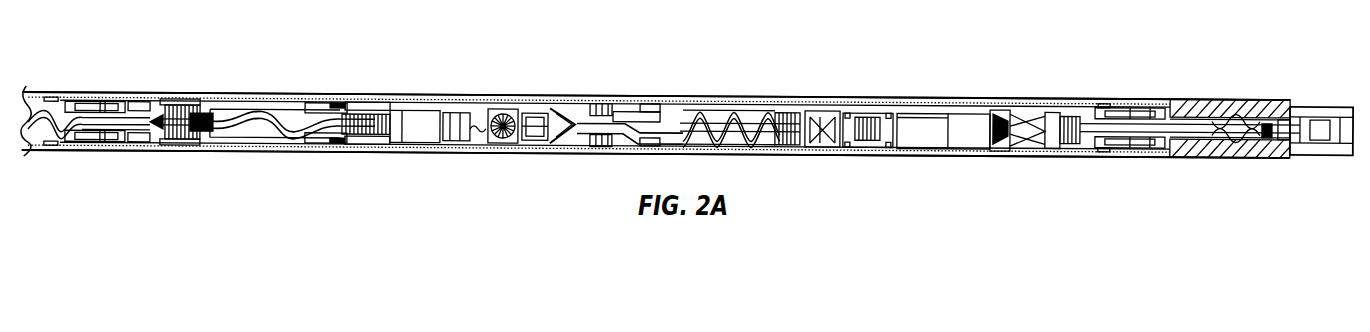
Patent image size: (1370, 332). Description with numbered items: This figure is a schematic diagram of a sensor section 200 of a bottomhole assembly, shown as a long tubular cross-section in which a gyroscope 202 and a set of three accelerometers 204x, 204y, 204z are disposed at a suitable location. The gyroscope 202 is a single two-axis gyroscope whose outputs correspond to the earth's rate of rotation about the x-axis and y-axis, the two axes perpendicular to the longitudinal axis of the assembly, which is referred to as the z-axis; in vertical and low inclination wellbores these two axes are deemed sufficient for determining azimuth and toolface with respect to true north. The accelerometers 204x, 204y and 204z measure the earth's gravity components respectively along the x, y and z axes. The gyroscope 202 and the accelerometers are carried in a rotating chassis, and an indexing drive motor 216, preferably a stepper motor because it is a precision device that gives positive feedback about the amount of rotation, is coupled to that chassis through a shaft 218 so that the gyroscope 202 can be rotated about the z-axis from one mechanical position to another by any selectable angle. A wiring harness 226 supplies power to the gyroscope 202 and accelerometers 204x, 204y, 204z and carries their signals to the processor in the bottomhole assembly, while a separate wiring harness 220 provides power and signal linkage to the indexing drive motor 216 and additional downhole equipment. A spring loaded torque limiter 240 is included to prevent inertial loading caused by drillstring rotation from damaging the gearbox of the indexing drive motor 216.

The sensor section 200 is at (1022, 68).
The gyroscope 202 is at (417, 113).
The accelerometer 204x is at (545, 130).
The accelerometer 204y is at (500, 113).
The accelerometer 204z is at (458, 130).
The indexing drive motor 216 is at (965, 125).
The shaft 218 is at (657, 125).
The wiring harness 220 is at (724, 102).
The wiring harness 226 is at (263, 115).
The spring loaded torque limiter 240 is at (827, 113).